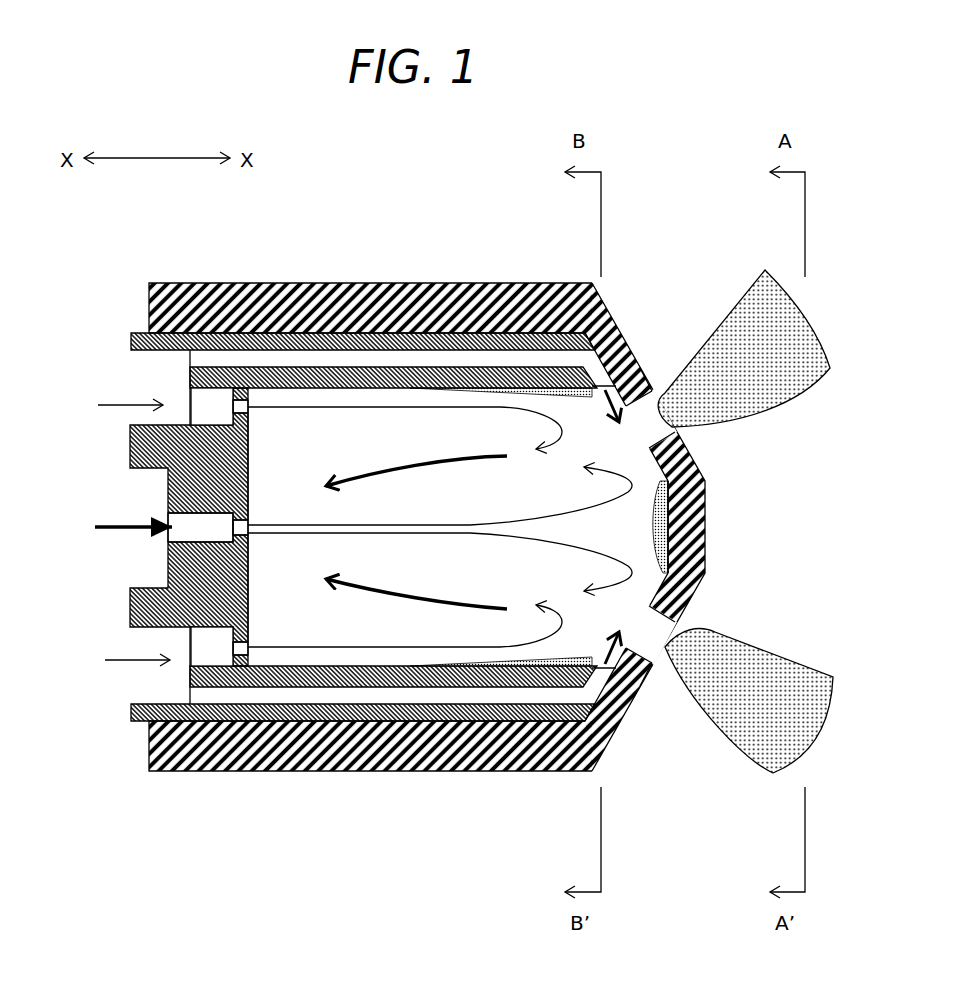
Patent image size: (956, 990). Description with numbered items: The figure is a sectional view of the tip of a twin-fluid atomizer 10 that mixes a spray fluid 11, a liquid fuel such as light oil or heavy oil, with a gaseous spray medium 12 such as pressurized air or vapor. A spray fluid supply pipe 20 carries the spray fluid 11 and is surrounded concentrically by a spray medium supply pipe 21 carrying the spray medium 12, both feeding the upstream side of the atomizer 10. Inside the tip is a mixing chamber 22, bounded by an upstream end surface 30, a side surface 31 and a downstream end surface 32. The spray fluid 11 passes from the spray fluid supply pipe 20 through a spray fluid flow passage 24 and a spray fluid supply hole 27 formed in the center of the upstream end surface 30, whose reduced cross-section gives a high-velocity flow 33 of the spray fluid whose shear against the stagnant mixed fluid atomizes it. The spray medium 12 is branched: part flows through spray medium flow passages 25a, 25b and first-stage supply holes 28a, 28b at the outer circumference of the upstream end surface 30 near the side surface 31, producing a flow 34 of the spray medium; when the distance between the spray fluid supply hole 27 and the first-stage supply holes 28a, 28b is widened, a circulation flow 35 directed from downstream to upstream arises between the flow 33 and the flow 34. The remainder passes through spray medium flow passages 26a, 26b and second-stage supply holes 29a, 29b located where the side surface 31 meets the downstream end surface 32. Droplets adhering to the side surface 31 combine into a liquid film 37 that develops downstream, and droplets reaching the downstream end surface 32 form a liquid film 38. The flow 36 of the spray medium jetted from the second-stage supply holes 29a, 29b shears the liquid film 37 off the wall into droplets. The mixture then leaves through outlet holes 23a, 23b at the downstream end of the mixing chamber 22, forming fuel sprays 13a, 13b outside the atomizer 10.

The atomizer 10 is at (706, 527).
The spray fluid 11 is at (97, 522).
The spray medium 12 is at (115, 405).
The fuel spray 13a is at (728, 315).
The fuel spray 13b is at (733, 733).
The spray fluid supply pipe 20 is at (156, 508).
The spray medium supply pipe 21 is at (157, 385).
The mixing chamber 22 is at (351, 454).
The outlet hole 23a is at (660, 427).
The outlet hole 23b is at (660, 630).
The spray fluid flow passage 24 is at (213, 530).
The spray medium flow passage 25a is at (197, 418).
The spray medium flow passage 25b is at (208, 640).
The spray medium flow passage 26a is at (395, 357).
The spray medium flow passage 26b is at (380, 697).
The spray fluid supply hole 27 is at (248, 517).
The first-stage supply hole 28a is at (247, 412).
The first-stage supply hole 28b is at (248, 647).
The second-stage supply hole 29a is at (595, 403).
The second-stage supply hole 29b is at (595, 651).
The upstream end surface 30 is at (250, 582).
The side surface 31 is at (353, 389).
The downstream end surface 32 is at (660, 483).
The flow of the spray fluid 33 is at (402, 523).
The flow of the spray medium 34 is at (424, 411).
The circulation flow 35 is at (463, 460).
The flow of the spray medium 36 is at (642, 368).
The liquid film 37 is at (530, 415).
The liquid film 38 is at (657, 543).